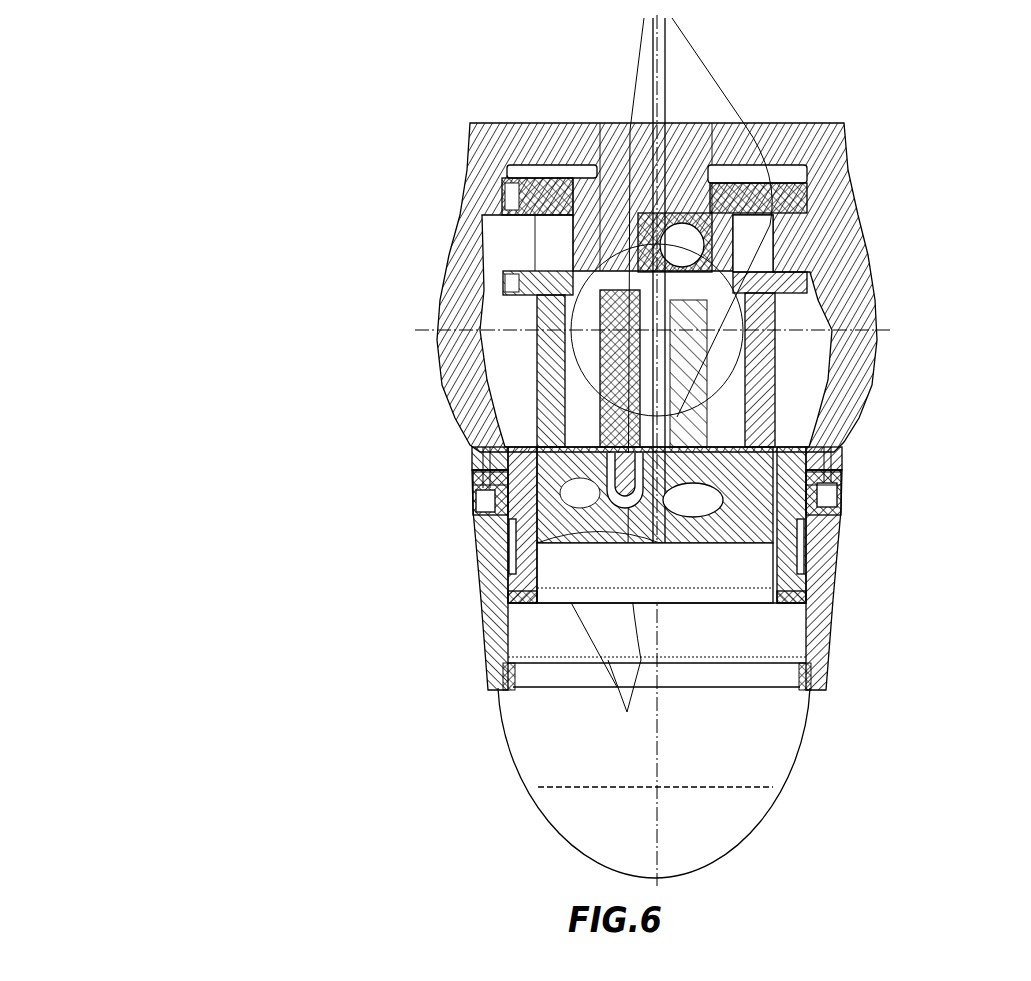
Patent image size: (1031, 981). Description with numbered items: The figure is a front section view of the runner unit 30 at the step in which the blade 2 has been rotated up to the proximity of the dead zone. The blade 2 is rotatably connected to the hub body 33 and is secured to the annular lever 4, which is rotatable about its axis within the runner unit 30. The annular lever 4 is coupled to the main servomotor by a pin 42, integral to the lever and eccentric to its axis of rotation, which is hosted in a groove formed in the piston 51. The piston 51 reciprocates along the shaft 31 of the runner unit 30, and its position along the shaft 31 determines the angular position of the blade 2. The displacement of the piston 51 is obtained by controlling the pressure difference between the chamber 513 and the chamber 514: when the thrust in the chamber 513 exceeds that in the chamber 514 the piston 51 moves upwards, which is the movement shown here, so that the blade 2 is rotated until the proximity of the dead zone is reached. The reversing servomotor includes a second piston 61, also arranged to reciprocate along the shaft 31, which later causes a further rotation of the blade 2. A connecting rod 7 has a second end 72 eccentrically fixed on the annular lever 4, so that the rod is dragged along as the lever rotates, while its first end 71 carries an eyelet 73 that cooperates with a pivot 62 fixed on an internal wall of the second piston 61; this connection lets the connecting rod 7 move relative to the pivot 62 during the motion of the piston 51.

The runner unit 30 is at (228, 129).
The blade 2 is at (692, 90).
The second end 72 is at (575, 200).
The pin 42 is at (683, 243).
The annular lever 4 is at (700, 314).
The shaft 31 is at (617, 208).
The first end 71 is at (548, 437).
The chamber 514 is at (669, 368).
The chamber 513 is at (665, 485).
The eyelet 73 is at (485, 488).
The second piston 61 is at (523, 512).
The piston 51 is at (603, 530).
The pivot 62 is at (657, 615).
The connecting rod 7 is at (830, 510).
The hub body 33 is at (493, 635).